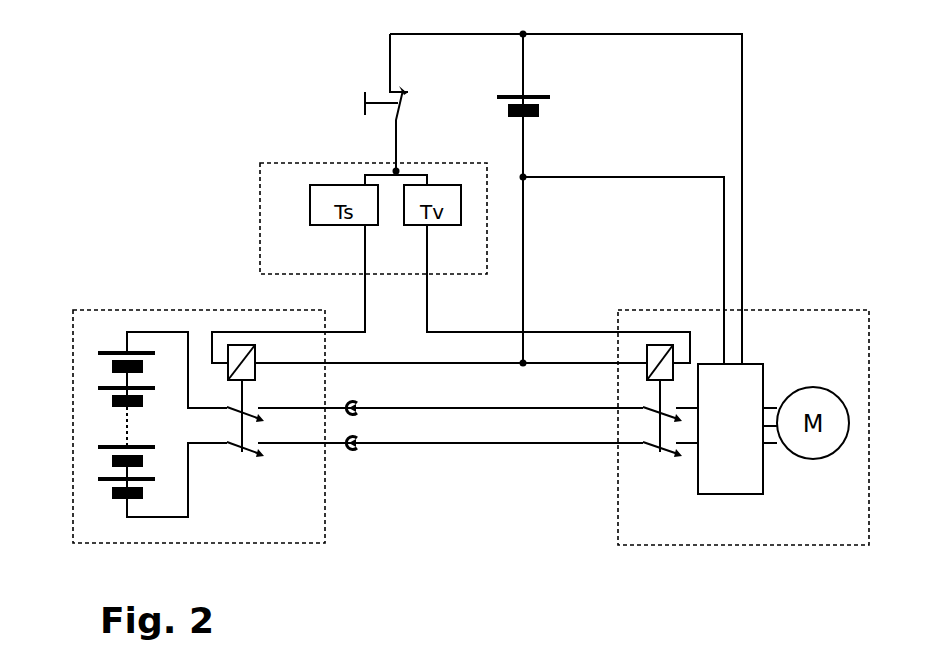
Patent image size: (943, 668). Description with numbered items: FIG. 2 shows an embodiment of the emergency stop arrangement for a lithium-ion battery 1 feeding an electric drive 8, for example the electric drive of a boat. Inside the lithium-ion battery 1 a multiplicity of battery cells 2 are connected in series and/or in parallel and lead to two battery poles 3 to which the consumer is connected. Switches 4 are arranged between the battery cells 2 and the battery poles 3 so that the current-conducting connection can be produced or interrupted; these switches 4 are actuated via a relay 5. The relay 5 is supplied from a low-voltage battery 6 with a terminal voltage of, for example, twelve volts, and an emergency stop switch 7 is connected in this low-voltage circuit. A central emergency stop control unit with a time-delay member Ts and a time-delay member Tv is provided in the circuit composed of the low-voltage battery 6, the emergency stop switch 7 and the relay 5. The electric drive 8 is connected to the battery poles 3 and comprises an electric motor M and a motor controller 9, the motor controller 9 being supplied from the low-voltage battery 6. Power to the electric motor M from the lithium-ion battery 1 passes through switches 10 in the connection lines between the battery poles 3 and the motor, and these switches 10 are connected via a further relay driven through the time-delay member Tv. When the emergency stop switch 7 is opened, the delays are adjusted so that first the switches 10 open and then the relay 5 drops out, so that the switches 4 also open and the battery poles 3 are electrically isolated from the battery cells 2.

The lithium-ion battery 1 is at (199, 446).
The battery cells 2 is at (162, 424).
The battery poles 3 is at (494, 443).
The switches 4 is at (287, 431).
The relay 5 is at (257, 359).
The low-voltage battery 6 is at (530, 198).
The emergency stop switch 7 is at (365, 128).
The electric drive 8 is at (743, 446).
The motor controller 9 is at (730, 429).
The switches 10 is at (670, 414).